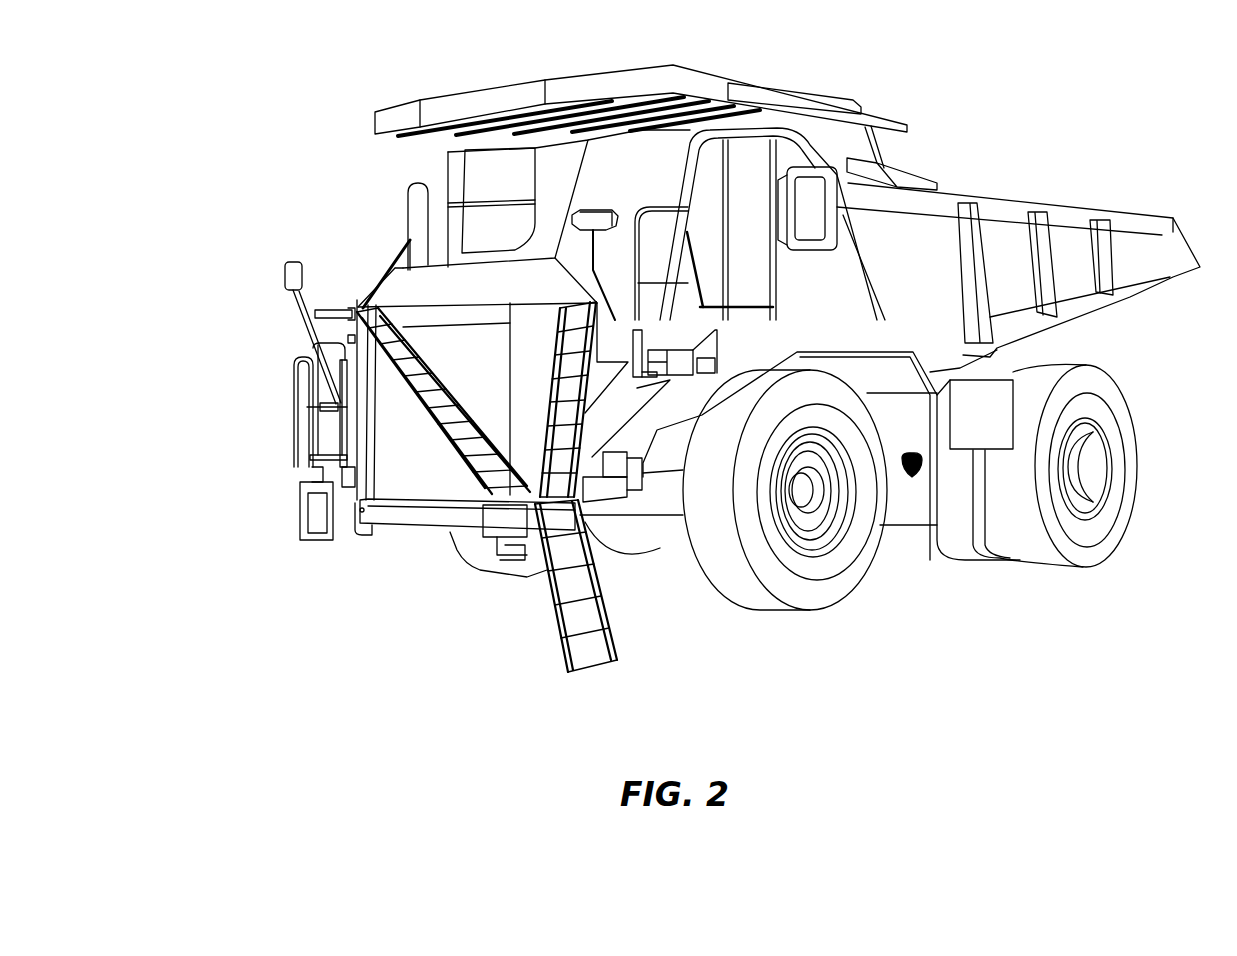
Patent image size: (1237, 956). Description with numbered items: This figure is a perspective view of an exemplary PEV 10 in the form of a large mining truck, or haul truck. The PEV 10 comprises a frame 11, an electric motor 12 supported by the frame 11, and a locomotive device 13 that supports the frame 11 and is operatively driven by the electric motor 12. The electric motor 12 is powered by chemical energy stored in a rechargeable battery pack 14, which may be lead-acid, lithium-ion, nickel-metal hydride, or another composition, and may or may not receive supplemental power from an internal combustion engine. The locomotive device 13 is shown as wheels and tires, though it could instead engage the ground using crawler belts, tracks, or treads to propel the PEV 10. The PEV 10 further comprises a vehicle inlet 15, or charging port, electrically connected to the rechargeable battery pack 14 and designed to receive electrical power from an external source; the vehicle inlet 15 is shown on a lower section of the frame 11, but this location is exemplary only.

The PEV 10 is at (286, 102).
The frame 11 is at (417, 515).
The electric motor 12 is at (398, 438).
The locomotive device 13 is at (1037, 547).
The rechargeable battery pack 14 is at (313, 333).
The vehicle inlet 15 is at (911, 478).